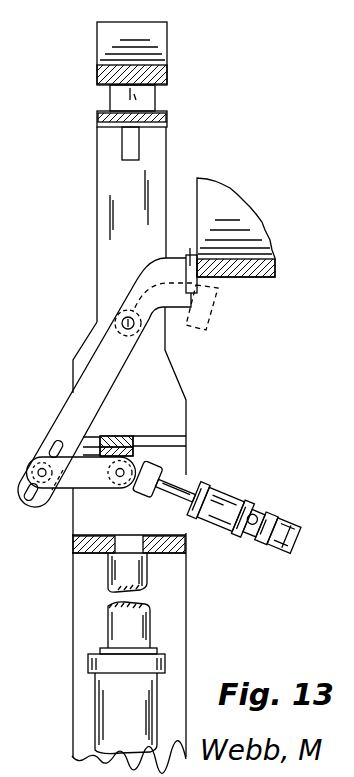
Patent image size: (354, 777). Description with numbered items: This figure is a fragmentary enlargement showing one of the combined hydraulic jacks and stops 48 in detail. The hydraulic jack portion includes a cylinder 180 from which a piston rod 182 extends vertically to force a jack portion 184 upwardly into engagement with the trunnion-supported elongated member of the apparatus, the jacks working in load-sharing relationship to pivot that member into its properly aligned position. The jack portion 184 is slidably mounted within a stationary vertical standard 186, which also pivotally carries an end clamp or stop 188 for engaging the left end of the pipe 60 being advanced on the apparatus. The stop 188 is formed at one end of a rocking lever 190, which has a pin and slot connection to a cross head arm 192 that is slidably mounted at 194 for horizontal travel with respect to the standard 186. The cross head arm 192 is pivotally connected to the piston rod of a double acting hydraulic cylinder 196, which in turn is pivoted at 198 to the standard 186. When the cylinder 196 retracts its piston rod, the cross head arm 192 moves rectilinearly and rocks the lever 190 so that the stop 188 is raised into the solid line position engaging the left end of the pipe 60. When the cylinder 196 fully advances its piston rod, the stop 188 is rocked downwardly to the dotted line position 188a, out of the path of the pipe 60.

The combined hydraulic jacks and stops 48 is at (82, 348).
The pipe 60 is at (276, 266).
The cylinder 180 is at (95, 713).
The piston rod 182 is at (108, 572).
The jack portion 184 is at (97, 76).
The stationary vertical standard 186 is at (100, 158).
The end clamp or stop 188 is at (190, 260).
The dotted line position of stop 188a is at (212, 304).
The rocking lever 190 is at (68, 416).
The cross head arm 192 is at (67, 489).
The slidable mounting 194 is at (121, 437).
The double acting hydraulic cylinder 196 is at (235, 500).
The pivot 198 is at (247, 545).